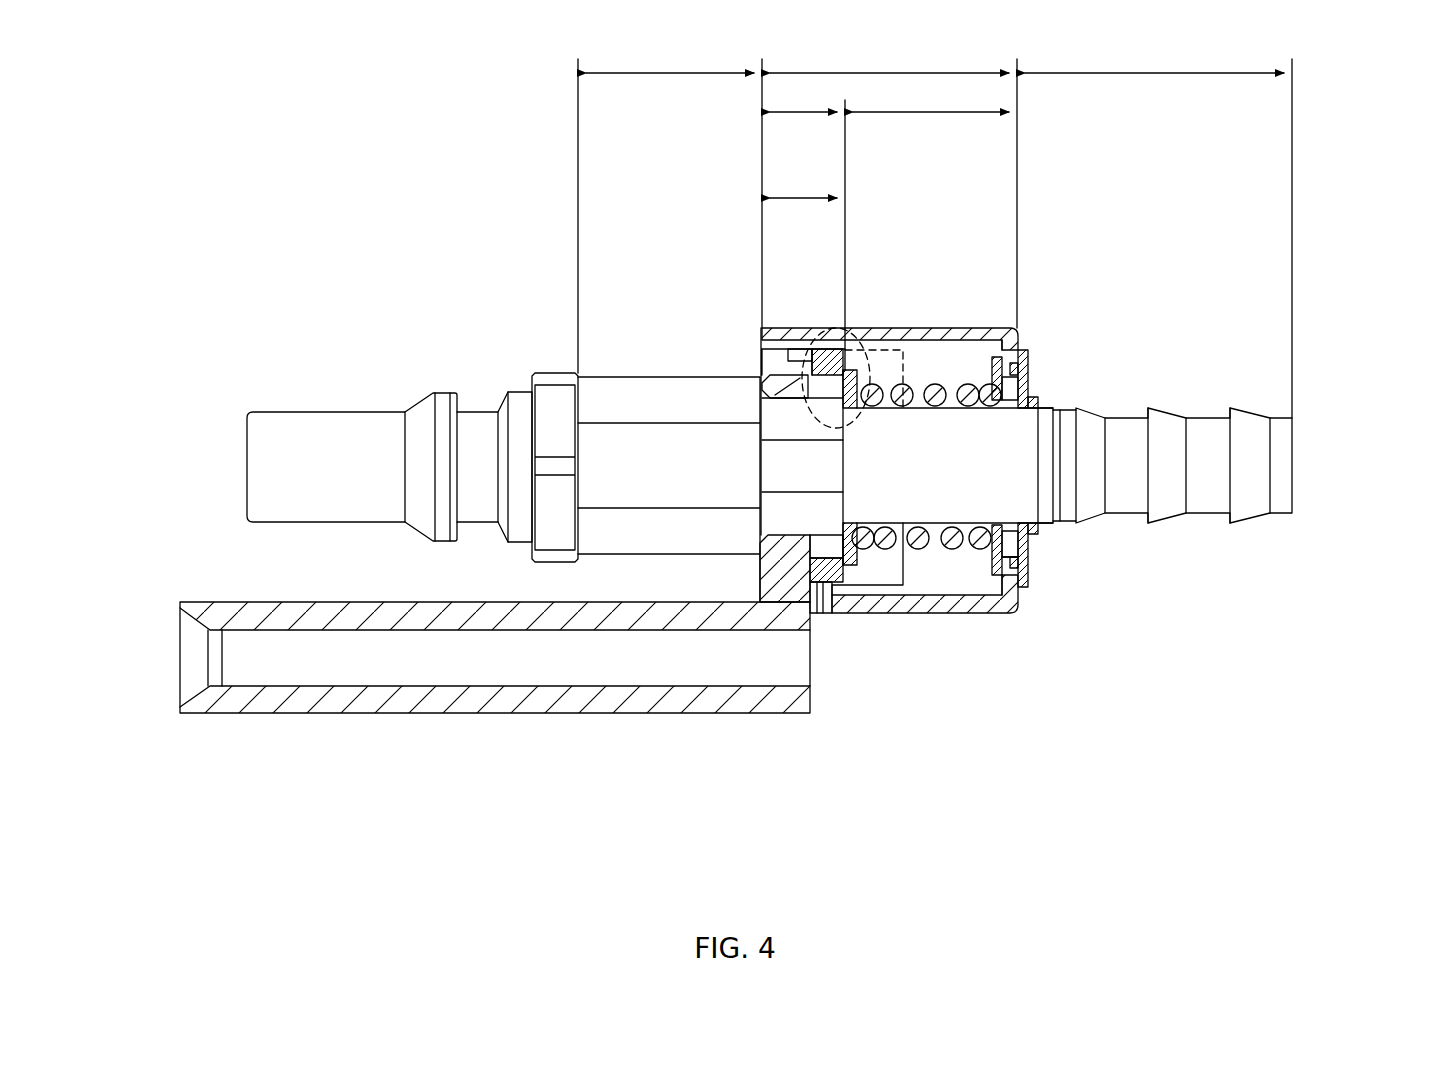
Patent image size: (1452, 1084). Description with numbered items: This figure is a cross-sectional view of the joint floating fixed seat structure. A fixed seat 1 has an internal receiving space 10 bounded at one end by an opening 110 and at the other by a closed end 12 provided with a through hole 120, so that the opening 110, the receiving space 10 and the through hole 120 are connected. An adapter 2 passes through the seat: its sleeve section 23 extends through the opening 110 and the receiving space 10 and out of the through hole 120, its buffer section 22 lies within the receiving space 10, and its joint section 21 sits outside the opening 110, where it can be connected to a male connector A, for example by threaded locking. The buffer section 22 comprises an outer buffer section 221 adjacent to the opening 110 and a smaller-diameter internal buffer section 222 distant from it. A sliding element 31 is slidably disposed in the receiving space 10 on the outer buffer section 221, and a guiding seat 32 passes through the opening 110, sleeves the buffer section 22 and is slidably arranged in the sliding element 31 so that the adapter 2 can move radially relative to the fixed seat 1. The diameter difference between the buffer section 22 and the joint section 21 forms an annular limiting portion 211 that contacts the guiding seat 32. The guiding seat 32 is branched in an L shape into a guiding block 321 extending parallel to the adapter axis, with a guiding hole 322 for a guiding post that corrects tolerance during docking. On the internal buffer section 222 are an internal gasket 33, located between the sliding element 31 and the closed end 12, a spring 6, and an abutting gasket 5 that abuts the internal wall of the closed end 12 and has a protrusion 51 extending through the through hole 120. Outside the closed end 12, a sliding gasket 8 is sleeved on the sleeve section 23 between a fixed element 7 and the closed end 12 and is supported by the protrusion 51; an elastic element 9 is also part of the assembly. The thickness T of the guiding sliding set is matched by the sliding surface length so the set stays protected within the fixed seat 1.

The male connector A is at (330, 412).
The fixed seat 1 is at (985, 614).
The adapter 2 is at (1322, 467).
The abutting gasket 5 is at (990, 362).
The spring 6 is at (885, 560).
The fixed element 7 is at (1035, 532).
The sliding gasket 8 is at (1032, 382).
The elastic element 9 is at (1030, 355).
The receiving space 10 is at (930, 575).
The closed end 12 is at (1018, 342).
The through hole 120 is at (1022, 550).
The joint section 21 is at (670, 206).
The buffer section 22 is at (893, 184).
The sleeve section 23 is at (1158, 229).
The outer buffer section 221 is at (807, 224).
The internal buffer section 222 is at (931, 95).
The thickness of the guiding sliding set T is at (803, 182).
The sliding element 31 is at (818, 615).
The guiding seat 32 is at (762, 378).
The internal gasket 33 is at (858, 368).
The protrusion 51 is at (968, 425).
The opening 110 is at (766, 360).
The limiting portion 211 is at (770, 540).
The guiding block 321 is at (388, 700).
The guiding hole 322 is at (205, 656).